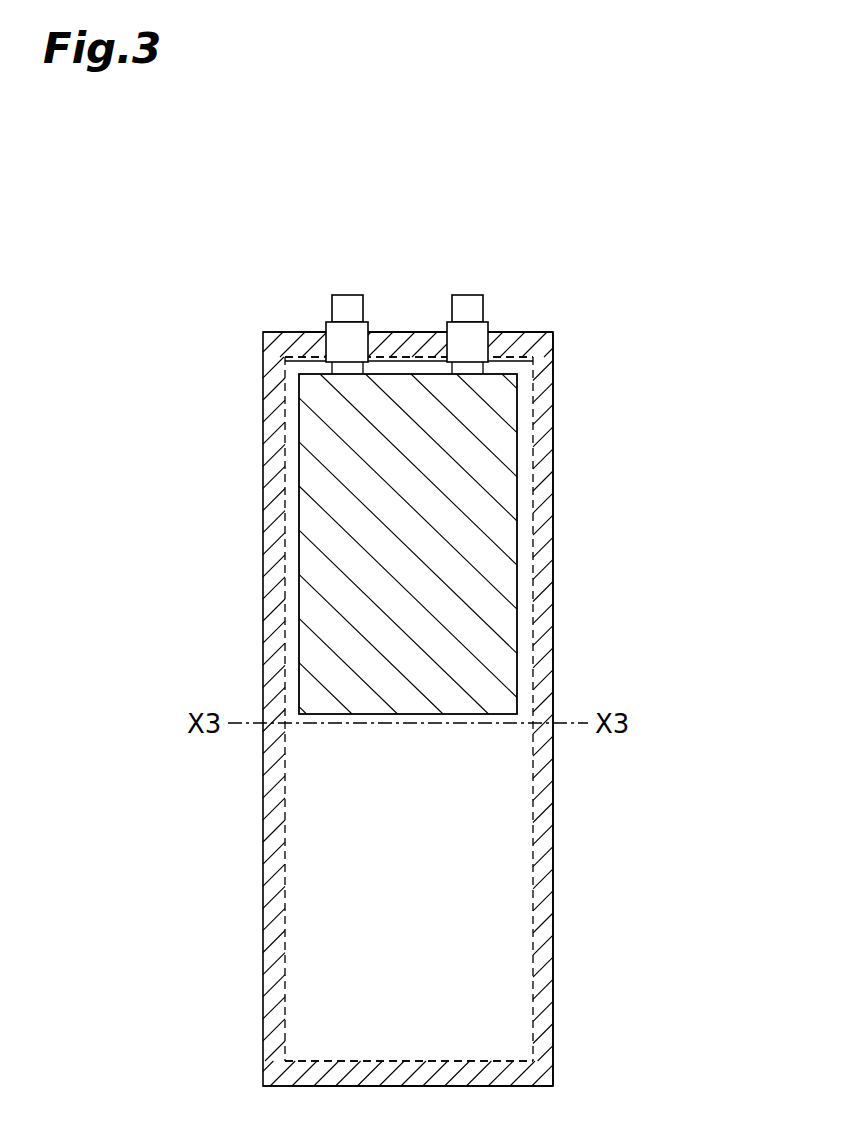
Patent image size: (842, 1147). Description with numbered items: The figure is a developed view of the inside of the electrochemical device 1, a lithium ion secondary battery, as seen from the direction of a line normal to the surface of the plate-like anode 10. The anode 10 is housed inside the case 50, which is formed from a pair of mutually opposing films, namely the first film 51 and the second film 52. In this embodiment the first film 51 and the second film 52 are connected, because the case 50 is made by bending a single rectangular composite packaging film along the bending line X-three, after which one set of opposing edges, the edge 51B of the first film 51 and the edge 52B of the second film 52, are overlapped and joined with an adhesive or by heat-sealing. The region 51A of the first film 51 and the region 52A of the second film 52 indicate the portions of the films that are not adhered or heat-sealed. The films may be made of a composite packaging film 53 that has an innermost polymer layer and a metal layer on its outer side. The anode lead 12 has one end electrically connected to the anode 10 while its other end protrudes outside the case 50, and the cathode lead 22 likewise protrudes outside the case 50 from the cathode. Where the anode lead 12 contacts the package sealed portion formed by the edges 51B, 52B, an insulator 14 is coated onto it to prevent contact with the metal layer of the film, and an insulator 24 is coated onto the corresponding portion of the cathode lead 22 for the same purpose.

The electrochemical device 1 is at (545, 225).
The anode 10 is at (328, 628).
The anode lead 12 is at (348, 295).
The insulator 14 is at (326, 330).
The cathode lead 22 is at (466, 295).
The insulator 24 is at (447, 327).
The case 50 is at (714, 347).
The first film 51 is at (657, 992).
The region of first film 51A is at (498, 1018).
The edge of first film 51B is at (543, 1070).
The second film 52 is at (657, 330).
The region of second film 52A is at (510, 365).
The edge of second film 52B is at (545, 339).
The composite packaging film 53 is at (553, 762).